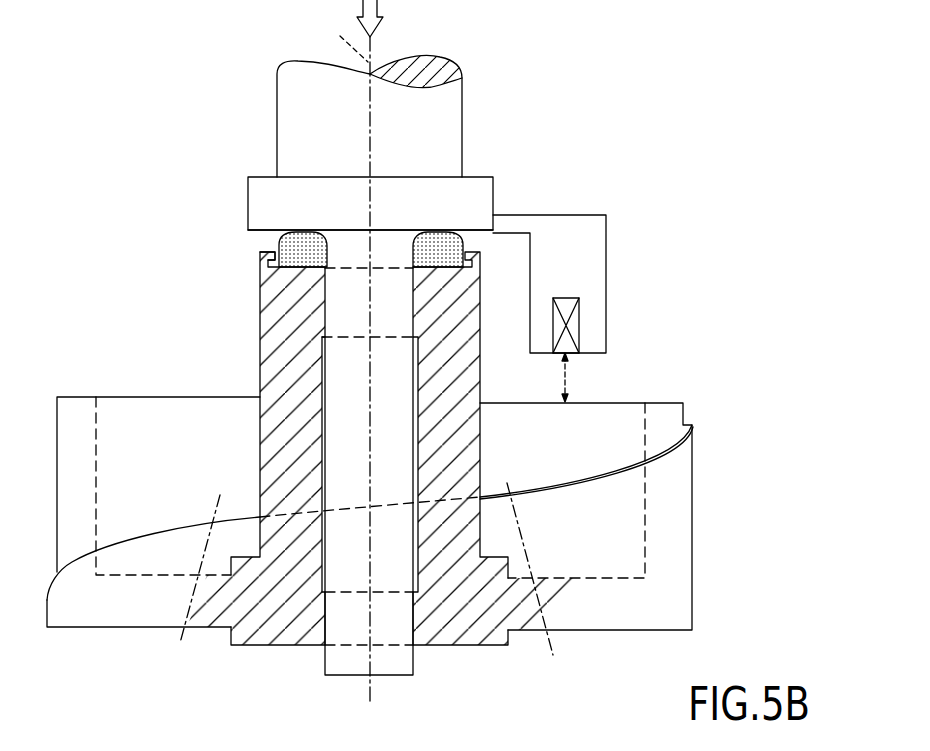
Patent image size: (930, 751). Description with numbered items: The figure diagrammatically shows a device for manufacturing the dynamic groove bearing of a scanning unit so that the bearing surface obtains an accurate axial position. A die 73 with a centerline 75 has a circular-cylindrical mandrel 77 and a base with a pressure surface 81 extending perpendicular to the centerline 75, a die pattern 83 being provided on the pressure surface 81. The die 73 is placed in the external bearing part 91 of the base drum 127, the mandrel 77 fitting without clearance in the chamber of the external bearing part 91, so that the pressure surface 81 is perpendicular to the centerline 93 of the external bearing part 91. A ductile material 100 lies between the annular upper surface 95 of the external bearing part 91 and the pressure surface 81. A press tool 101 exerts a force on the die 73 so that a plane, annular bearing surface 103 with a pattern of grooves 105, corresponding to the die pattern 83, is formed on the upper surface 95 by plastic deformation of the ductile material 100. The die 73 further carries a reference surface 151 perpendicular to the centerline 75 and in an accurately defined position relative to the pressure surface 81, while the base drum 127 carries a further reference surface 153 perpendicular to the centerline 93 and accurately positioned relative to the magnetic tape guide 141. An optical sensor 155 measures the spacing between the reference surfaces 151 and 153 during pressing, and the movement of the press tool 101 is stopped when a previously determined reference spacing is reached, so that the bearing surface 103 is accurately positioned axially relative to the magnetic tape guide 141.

The die 73 is at (210, 222).
The centerline 75 is at (340, 40).
The circular-cylindrical mandrel 77 is at (337, 658).
The pressure surface 81 is at (340, 201).
The die pattern 83 is at (257, 228).
The external bearing part 91 is at (476, 319).
The centerline 93 is at (372, 692).
The annular upper surface 95 is at (273, 254).
The ductile material 100 is at (280, 240).
The press tool 101 is at (448, 122).
The bearing surface 103 is at (370, 204).
The pattern of grooves 105 is at (308, 224).
The base drum 127 is at (75, 412).
The magnetic tape guide 141 is at (577, 487).
The reference surface 151 is at (592, 350).
The further reference surface 153 is at (668, 403).
The optical sensor 155 is at (567, 303).